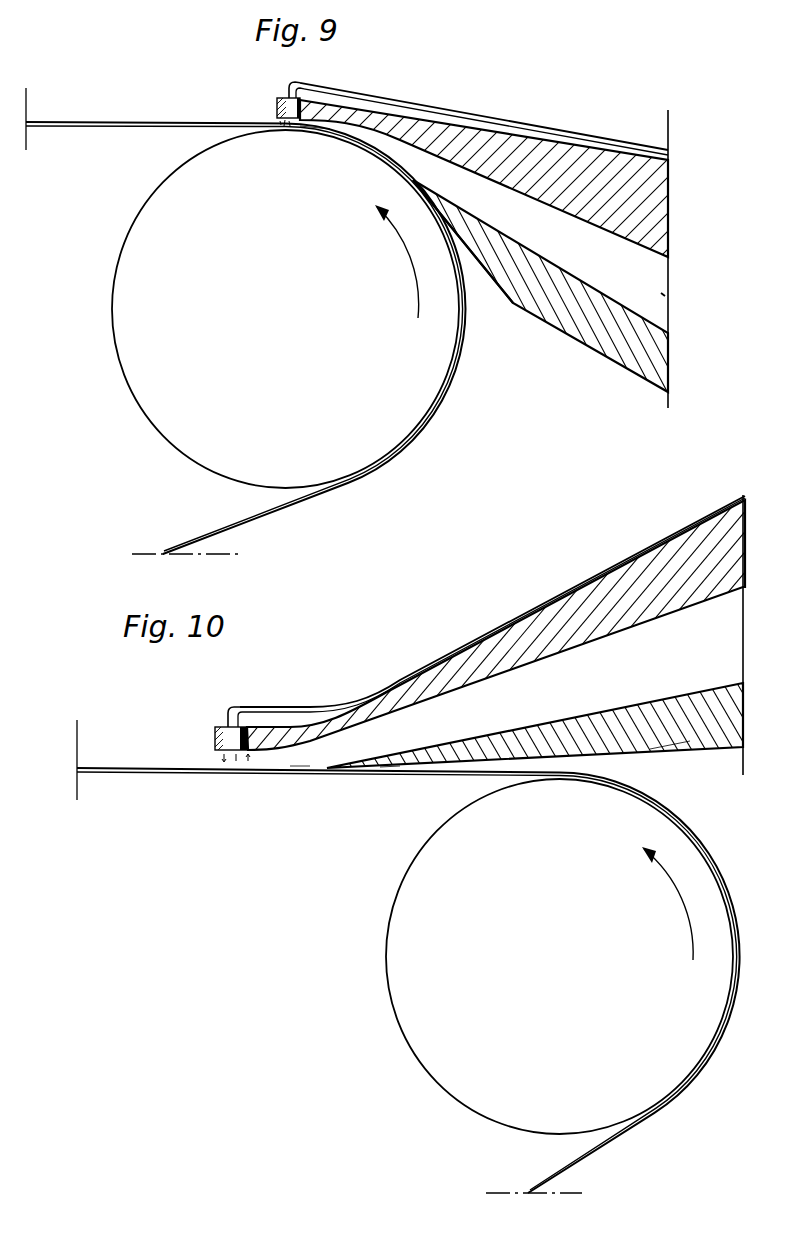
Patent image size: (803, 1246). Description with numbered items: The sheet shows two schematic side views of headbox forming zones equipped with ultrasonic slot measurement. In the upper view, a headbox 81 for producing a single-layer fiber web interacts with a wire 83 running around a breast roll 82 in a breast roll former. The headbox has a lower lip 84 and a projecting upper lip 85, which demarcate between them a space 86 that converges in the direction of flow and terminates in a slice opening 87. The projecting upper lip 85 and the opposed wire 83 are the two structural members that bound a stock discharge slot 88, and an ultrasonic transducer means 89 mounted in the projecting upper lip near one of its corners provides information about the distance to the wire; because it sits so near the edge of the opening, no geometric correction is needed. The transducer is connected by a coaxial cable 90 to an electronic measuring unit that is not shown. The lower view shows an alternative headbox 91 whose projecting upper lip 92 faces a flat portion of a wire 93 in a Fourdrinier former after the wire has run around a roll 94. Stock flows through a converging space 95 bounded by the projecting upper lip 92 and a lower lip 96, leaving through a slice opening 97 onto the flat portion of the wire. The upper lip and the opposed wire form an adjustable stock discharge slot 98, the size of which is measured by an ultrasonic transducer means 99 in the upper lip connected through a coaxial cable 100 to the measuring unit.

In FIG. 9, the headbox 81 is at (583, 347).
In FIG. 9, the breast roll 82 is at (131, 364).
In FIG. 9, the wire 83 is at (127, 127).
In FIG. 9, the lower lip 84 is at (518, 310).
In FIG. 9, the projecting upper lip 85 is at (515, 134).
In FIG. 9, the space 86 is at (664, 296).
In FIG. 9, the slice opening 87 is at (337, 133).
In FIG. 9, the stock discharge slot 88 is at (280, 122).
In FIG. 9, the ultrasonic transducer means 89 is at (289, 92).
In FIG. 9, the coaxial cable 90 is at (378, 90).
In FIG. 10, the headbox 91 is at (670, 752).
In FIG. 10, the projecting upper lip 92 is at (367, 710).
In FIG. 10, the wire 93 is at (163, 772).
In FIG. 10, the roll 94 is at (388, 960).
In FIG. 10, the space 95 is at (455, 715).
In FIG. 10, the lower lip 96 is at (387, 763).
In FIG. 10, the slice opening 97 is at (297, 763).
In FIG. 10, the stock discharge slot 98 is at (215, 757).
In FIG. 10, the ultrasonic transducer means 99 is at (232, 722).
In FIG. 10, the coaxial cable 100 is at (293, 707).